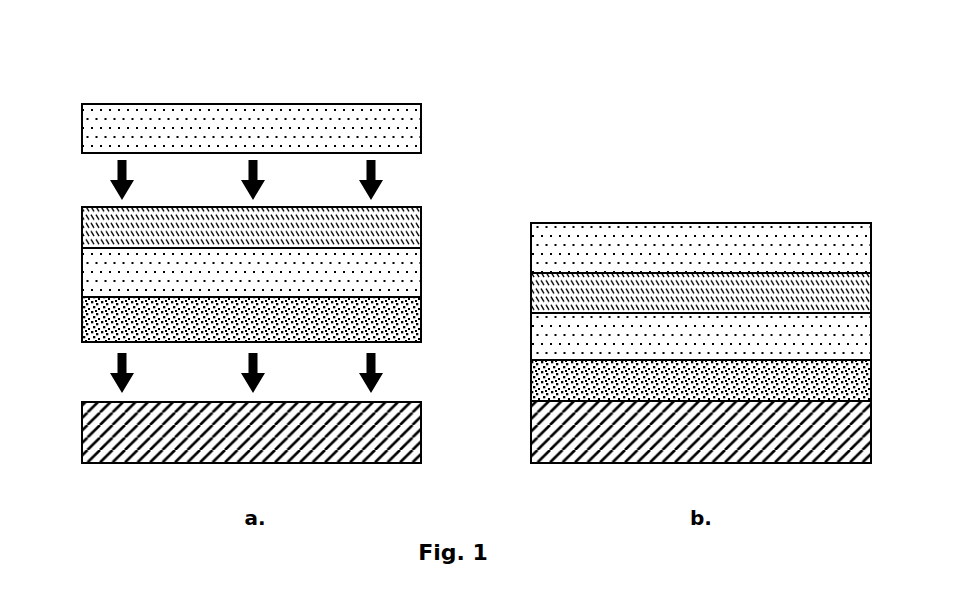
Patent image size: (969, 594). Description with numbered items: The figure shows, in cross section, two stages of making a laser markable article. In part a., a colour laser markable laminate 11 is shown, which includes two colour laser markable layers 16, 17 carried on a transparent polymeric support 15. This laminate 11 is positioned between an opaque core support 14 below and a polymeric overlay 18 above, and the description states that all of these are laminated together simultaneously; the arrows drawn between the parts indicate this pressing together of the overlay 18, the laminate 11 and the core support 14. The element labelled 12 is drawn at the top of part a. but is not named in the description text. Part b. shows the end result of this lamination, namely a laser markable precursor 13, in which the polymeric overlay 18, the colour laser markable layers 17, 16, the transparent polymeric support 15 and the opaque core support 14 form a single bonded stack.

The colour laser markable laminate 11 is at (68, 278).
The cover layer 12 is at (137, 98).
The laser markable precursor 13 is at (677, 202).
The opaque core support 14 is at (421, 415).
The transparent polymeric support 15 is at (405, 264).
The colour laser markable layer 16 is at (415, 331).
The colour laser markable layer 17 is at (415, 224).
The polymeric overlay 18 is at (563, 243).